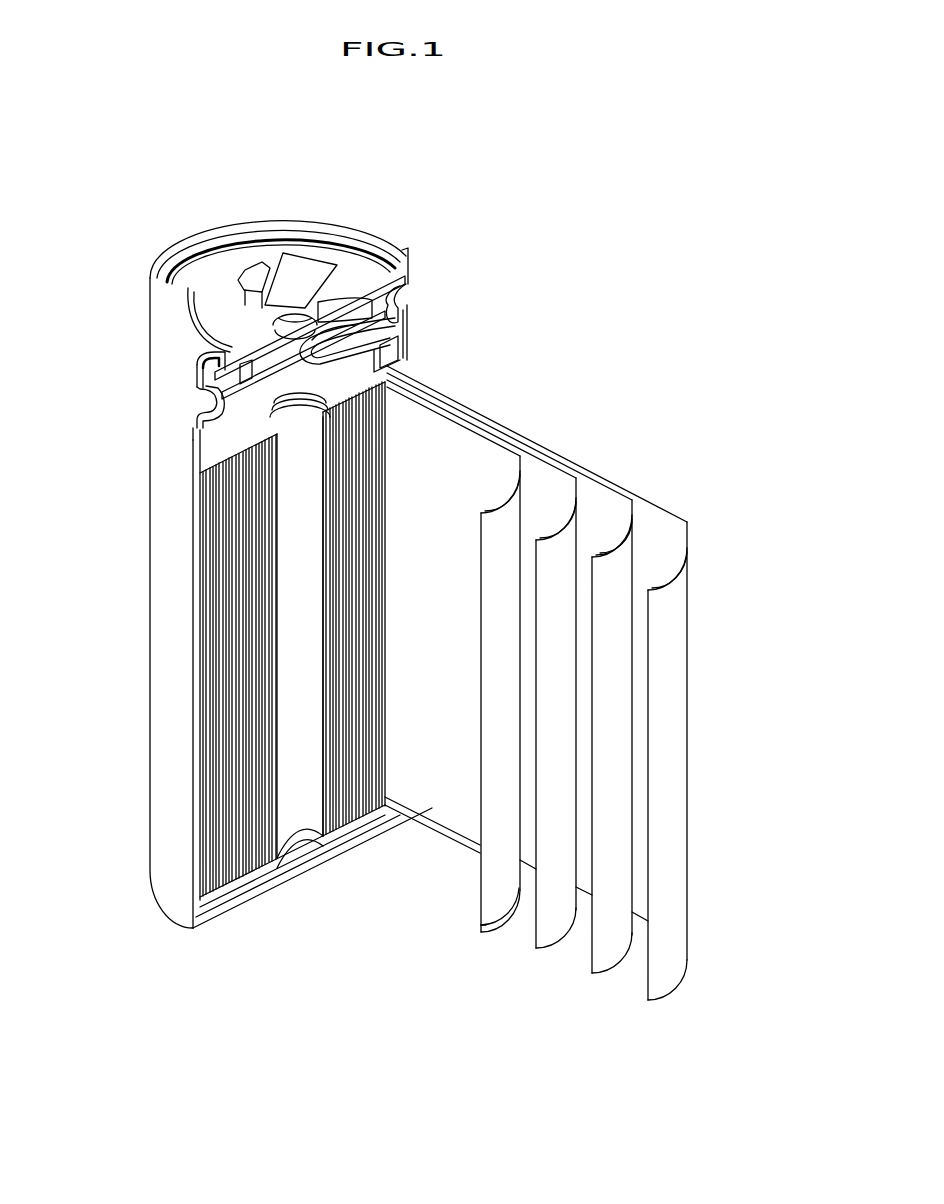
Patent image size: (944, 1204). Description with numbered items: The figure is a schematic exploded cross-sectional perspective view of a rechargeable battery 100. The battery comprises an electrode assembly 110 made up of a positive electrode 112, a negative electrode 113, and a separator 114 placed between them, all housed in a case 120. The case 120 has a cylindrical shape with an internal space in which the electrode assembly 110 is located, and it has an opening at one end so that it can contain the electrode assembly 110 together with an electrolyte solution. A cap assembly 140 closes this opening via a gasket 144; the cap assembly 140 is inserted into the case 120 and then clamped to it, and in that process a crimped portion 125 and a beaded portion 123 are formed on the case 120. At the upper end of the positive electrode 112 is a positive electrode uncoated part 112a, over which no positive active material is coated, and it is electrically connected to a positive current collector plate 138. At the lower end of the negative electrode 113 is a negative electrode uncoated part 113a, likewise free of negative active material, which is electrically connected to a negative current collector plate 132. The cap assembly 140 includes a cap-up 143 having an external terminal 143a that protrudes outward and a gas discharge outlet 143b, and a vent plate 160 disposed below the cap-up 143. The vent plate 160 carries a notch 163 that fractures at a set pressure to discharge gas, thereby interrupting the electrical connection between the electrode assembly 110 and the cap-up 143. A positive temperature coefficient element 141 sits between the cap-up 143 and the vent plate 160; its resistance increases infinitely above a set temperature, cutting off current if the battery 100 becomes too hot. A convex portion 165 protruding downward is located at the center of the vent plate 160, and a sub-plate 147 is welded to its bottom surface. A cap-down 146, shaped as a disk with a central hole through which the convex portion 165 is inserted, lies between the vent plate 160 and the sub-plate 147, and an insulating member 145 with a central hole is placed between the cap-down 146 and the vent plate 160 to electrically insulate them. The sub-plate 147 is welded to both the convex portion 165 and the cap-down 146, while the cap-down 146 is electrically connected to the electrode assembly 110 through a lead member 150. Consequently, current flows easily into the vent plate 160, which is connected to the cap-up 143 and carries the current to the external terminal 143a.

The rechargeable battery 100 is at (319, 144).
The electrode assembly 110 is at (352, 810).
The positive electrode 112 is at (610, 960).
The positive electrode uncoated part 112a is at (598, 492).
The negative electrode 113 is at (484, 904).
The negative electrode uncoated part 113a is at (487, 927).
The separator 114 is at (552, 937).
The case 120 is at (157, 569).
The beaded portion 123 is at (207, 410).
The crimped portion 125 is at (190, 381).
The negative current collector plate 132 is at (247, 880).
The positive current collector plate 138 is at (207, 447).
The cap assembly 140 is at (490, 197).
The positive temperature coefficient element 141 is at (373, 282).
The cap-up 143 is at (357, 263).
The external terminal 143a is at (215, 268).
The gas discharge outlet 143b is at (228, 303).
The gasket 144 is at (207, 355).
The insulating member 145 is at (392, 318).
The cap-down 146 is at (365, 330).
The sub-plate 147 is at (348, 314).
The lead member 150 is at (397, 353).
The vent plate 160 is at (363, 303).
The notch 163 is at (293, 323).
The convex portion 165 is at (265, 292).